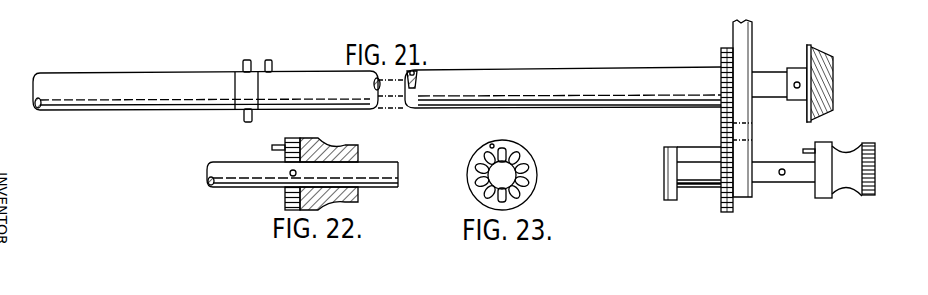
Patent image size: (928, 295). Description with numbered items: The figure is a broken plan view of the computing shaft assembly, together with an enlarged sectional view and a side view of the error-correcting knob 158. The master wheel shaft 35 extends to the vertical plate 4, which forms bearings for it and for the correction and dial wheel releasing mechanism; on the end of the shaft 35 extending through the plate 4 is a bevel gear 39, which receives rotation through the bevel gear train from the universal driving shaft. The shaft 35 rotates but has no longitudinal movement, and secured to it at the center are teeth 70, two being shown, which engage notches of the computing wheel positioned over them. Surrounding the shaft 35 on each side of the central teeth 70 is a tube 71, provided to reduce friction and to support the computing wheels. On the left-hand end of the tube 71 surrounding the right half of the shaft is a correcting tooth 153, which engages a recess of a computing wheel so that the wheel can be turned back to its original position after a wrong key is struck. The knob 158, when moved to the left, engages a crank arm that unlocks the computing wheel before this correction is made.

In FIG. 21, the tube 71 is at (377, 85).
In FIG. 21, the correcting tooth 153 is at (270, 60).
In FIG. 21, the tooth 70 is at (247, 122).
In FIG. 21, the master wheel shaft 35 is at (408, 88).
In FIG. 21, the vertical plate 4 is at (752, 193).
In FIG. 21, the bevel gear 39 is at (833, 83).
In FIG. 21, the knob 158 is at (875, 166).
In FIG. 22, the knob 158 is at (358, 196).
In FIG. 23, the knob 158 is at (537, 184).